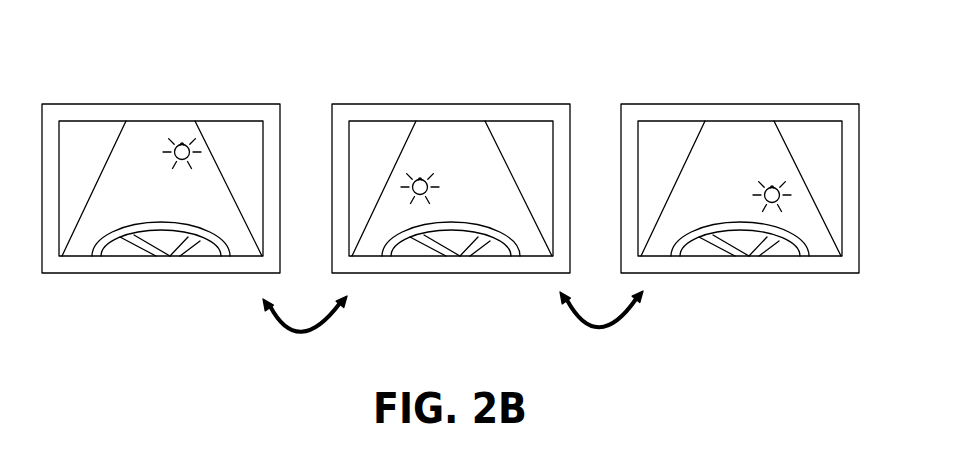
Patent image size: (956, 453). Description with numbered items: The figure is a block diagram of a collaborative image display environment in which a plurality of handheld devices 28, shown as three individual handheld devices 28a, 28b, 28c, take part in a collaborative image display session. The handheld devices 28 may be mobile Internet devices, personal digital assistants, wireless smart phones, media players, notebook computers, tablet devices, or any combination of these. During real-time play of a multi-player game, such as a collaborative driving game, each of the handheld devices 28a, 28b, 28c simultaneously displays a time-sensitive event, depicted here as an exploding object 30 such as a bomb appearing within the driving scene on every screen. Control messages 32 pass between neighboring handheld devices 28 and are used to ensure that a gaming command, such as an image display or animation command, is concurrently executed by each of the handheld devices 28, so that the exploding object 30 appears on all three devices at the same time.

The handheld devices 28 is at (654, 49).
The handheld device 28a is at (143, 273).
The handheld device 28b is at (468, 273).
The handheld device 28c is at (773, 273).
The exploding object 30 is at (183, 180).
The control messages 32 is at (292, 336).